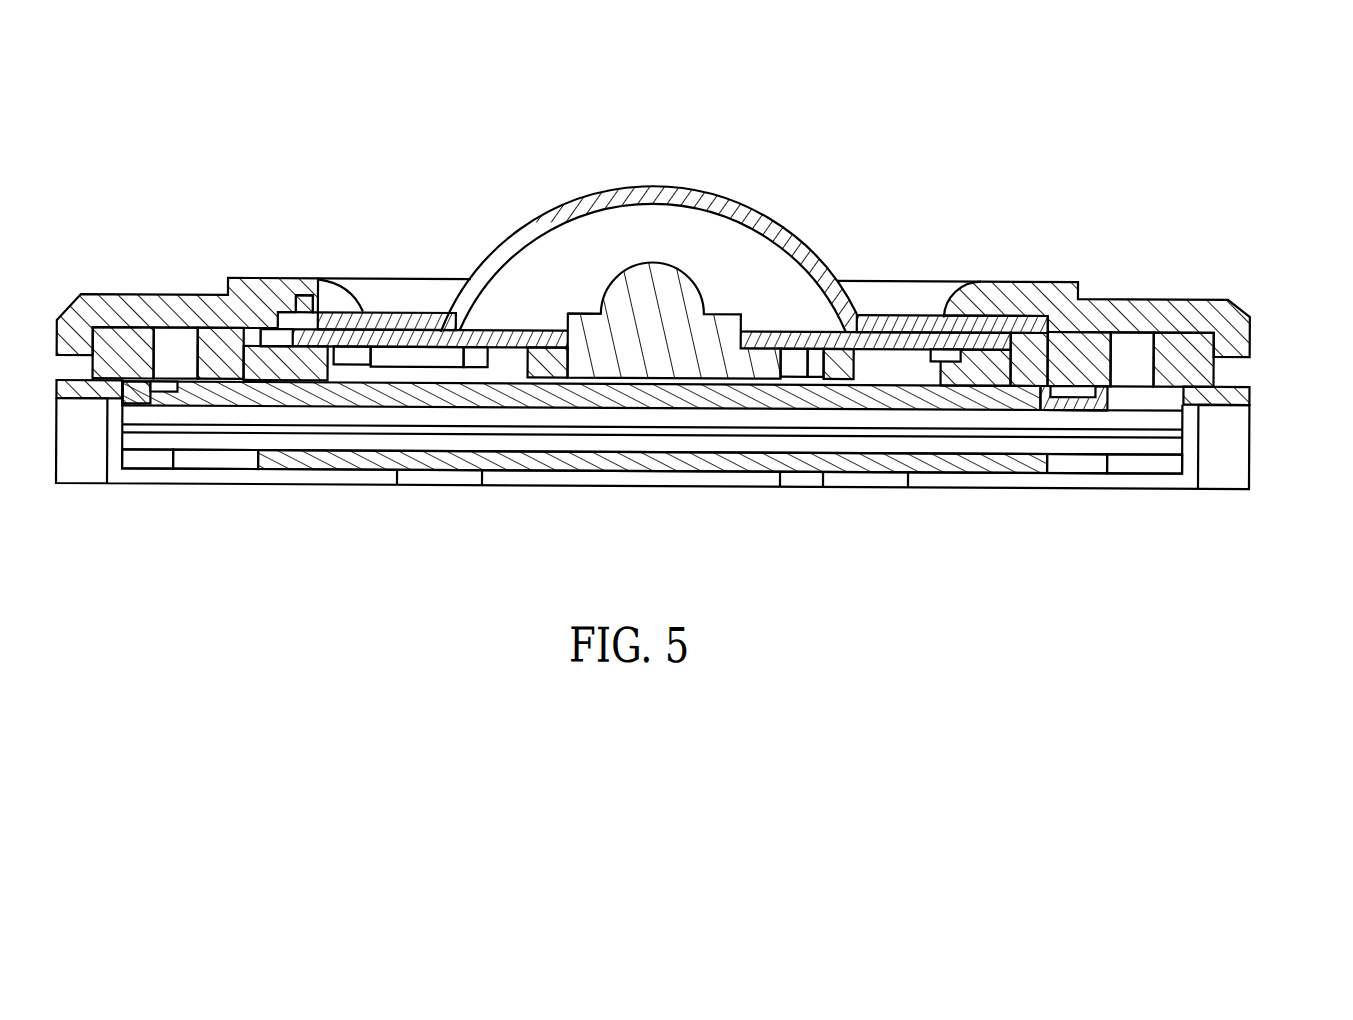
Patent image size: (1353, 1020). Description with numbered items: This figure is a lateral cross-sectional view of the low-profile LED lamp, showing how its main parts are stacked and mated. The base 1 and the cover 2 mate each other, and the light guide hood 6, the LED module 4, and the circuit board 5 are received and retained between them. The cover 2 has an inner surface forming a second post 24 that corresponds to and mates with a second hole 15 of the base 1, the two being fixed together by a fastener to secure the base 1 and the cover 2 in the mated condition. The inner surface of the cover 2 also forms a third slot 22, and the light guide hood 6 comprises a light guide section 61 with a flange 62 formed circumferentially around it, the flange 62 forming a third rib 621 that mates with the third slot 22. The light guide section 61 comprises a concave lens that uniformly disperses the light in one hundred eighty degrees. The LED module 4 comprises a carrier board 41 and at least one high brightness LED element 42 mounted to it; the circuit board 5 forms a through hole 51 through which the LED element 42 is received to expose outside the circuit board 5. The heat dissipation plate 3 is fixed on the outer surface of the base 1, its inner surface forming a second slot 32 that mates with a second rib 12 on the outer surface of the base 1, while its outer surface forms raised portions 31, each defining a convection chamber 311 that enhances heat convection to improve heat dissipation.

The base 1 is at (85, 484).
The cover 2 is at (120, 293).
The third slot 22 is at (300, 311).
The third rib 621 is at (296, 299).
The flange 62 is at (377, 308).
The light guide hood 6 is at (683, 177).
The light guide section 61 is at (654, 179).
The circuit board 5 is at (815, 251).
The LED module 4 is at (637, 216).
The carrier board 41 is at (803, 323).
The LED element 42 is at (760, 366).
The through hole 51 is at (577, 340).
The second hole 15 is at (1172, 359).
The second post 24 is at (1218, 382).
The heat dissipation plate 3 is at (652, 470).
The raised portion 31 is at (690, 443).
The convection chamber 311 is at (690, 440).
The second slot 32 is at (1053, 391).
The second rib 12 is at (1057, 395).